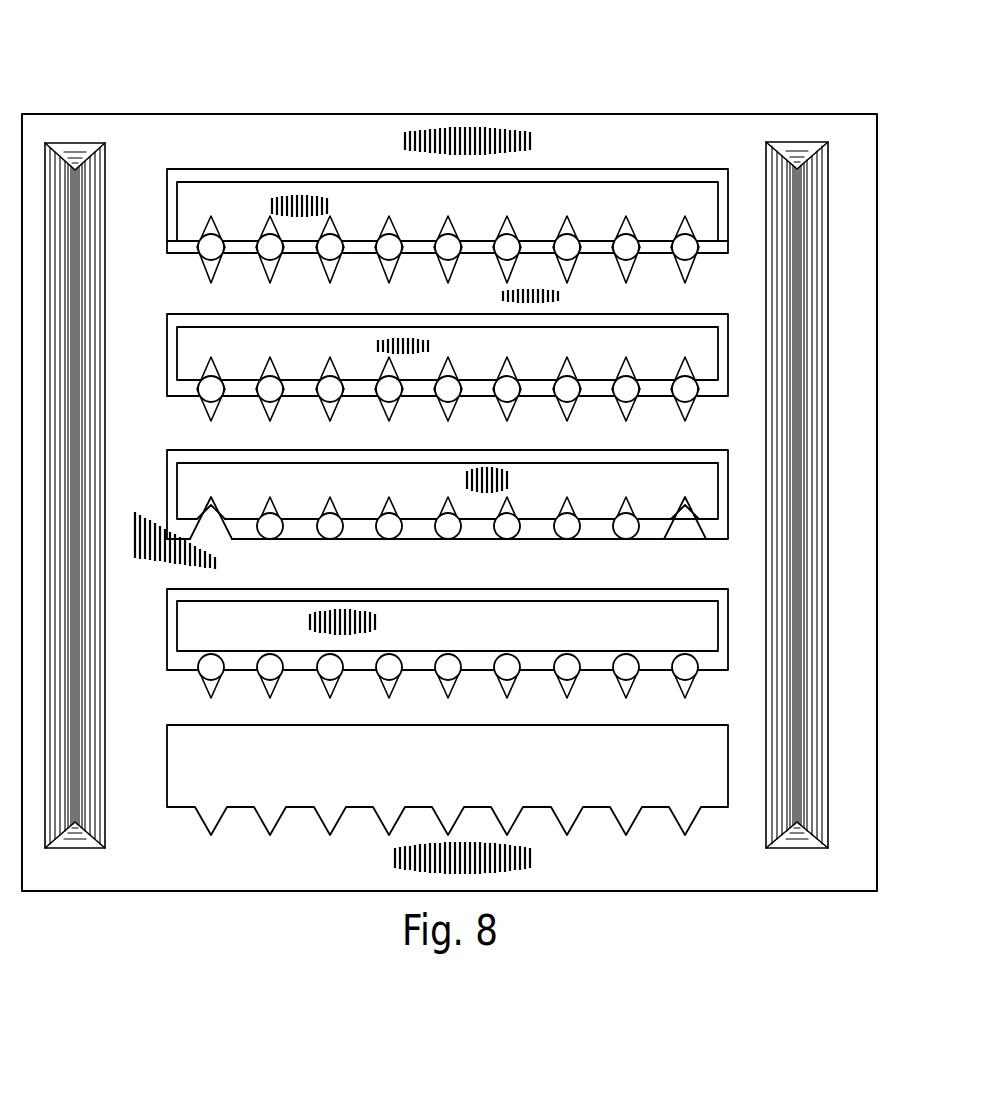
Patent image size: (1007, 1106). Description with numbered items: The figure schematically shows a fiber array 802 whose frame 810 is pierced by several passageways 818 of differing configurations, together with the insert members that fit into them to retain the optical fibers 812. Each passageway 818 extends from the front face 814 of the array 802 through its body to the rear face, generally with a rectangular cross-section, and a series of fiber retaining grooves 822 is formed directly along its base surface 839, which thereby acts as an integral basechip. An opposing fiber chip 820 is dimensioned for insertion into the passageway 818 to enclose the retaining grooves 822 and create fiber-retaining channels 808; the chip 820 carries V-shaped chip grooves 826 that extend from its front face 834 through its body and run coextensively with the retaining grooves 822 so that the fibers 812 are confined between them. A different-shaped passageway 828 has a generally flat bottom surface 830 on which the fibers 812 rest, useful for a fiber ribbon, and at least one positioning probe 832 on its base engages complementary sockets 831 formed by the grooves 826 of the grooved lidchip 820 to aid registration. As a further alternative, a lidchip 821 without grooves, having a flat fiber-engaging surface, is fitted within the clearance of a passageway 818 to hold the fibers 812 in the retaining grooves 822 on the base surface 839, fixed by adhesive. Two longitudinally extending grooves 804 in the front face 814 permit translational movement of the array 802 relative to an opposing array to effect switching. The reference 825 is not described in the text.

The array 802 is at (484, 88).
The longitudinally extending grooves 804 is at (60, 150).
The fiber-retaining channels 808 is at (729, 247).
The frame 810 is at (274, 114).
The optical fibers 812 is at (198, 249).
The front face 814 is at (574, 871).
The passageways 818 is at (573, 178).
The fiber chip 820 is at (632, 211).
The lidchip 821 is at (582, 640).
The fiber retaining grooves 822 is at (692, 270).
The plate corner 825 is at (200, 725).
The chip grooves 826 is at (568, 230).
The different-shaped passageway 828 is at (730, 512).
The flat bottom surface 830 is at (416, 538).
The sockets 831 is at (190, 516).
The positioning probe 832 is at (222, 530).
The front face of the chip 834 is at (356, 190).
The base surface 839 is at (172, 250).